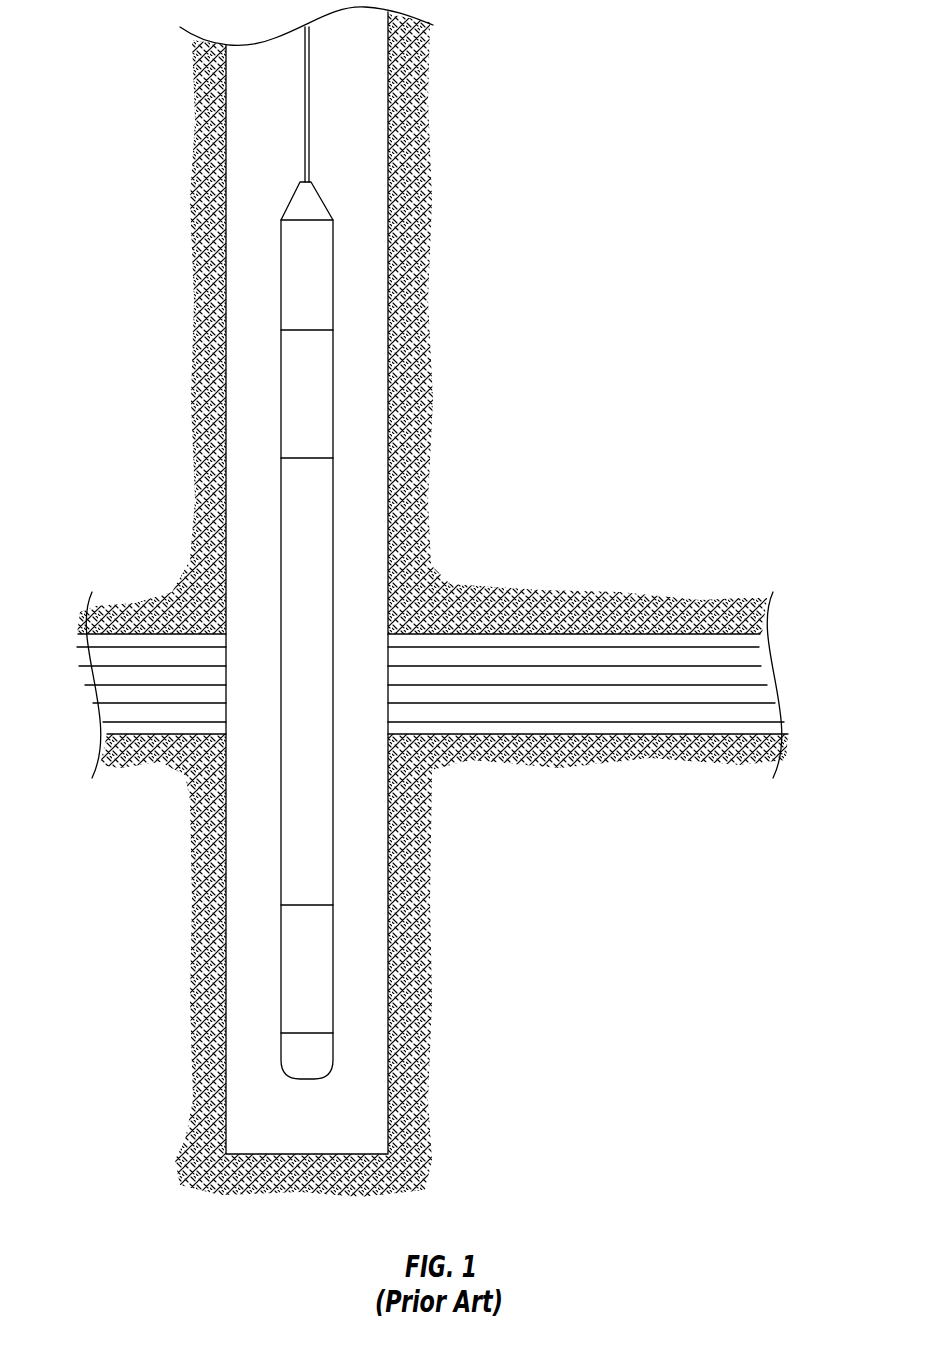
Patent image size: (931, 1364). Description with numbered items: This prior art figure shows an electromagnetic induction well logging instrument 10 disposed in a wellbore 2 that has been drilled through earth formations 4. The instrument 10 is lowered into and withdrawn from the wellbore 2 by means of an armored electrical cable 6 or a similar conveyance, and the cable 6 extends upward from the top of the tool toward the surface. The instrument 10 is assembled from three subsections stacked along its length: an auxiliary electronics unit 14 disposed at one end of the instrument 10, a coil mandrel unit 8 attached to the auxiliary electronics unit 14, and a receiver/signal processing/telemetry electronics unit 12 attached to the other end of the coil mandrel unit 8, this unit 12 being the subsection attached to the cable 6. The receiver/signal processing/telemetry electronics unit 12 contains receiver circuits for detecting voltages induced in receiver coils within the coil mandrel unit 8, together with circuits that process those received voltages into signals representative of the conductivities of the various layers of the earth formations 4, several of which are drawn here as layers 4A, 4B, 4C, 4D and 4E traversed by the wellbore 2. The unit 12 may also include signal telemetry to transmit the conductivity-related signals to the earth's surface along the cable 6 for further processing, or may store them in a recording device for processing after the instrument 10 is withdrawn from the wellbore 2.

The wellbore 2 is at (365, 140).
The earth formations 4 is at (440, 685).
The layer of the earth formations 4A is at (759, 637).
The layer of the earth formations 4B is at (760, 652).
The layer of the earth formations 4C is at (768, 694).
The layer of the earth formations 4D is at (773, 708).
The layer of the earth formations 4E is at (777, 726).
The armored electrical cable 6 is at (305, 112).
The coil mandrel unit 8 is at (284, 630).
The electromagnetic induction well logging instrument 10 is at (354, 553).
The receiver/signal processing/telemetry electronics unit 12 is at (297, 386).
The auxiliary electronics unit 14 is at (297, 973).